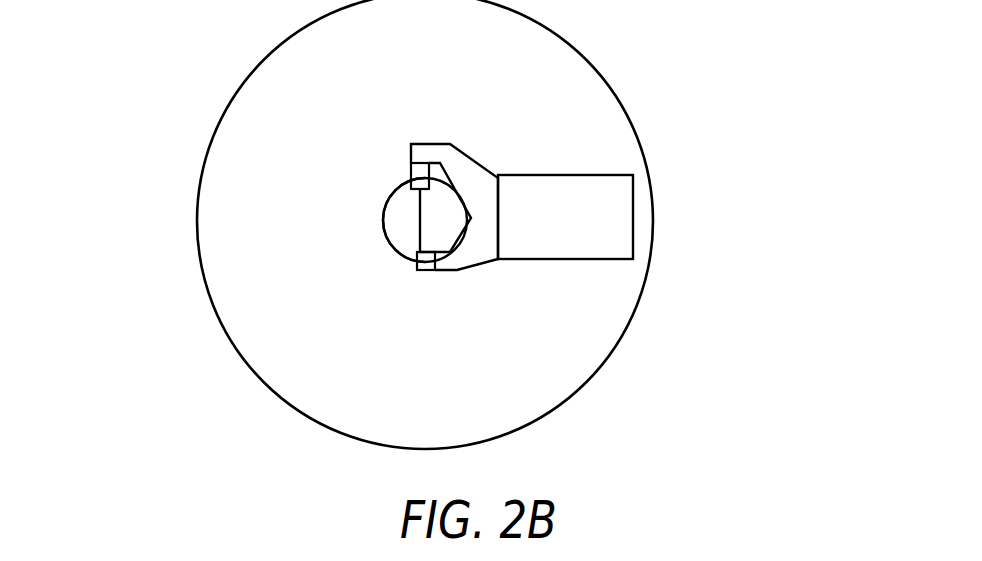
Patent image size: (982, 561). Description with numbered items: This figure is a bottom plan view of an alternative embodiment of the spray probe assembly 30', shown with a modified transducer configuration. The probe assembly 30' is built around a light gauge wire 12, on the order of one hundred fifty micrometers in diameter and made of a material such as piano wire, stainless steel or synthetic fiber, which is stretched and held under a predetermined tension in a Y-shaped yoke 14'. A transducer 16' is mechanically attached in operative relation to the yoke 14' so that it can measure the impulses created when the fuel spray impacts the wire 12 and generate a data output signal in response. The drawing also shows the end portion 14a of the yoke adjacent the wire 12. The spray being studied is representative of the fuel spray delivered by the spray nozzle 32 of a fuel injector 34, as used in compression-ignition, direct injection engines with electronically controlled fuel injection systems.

The fuel injector 34 is at (197, 203).
The probe assembly 30' is at (464, 151).
The yoke 14' is at (565, 169).
The transducer 16' is at (364, 145).
The light gauge wire 12 is at (418, 214).
The spray nozzle 32 is at (386, 236).
The shaft end portion 14a is at (433, 262).